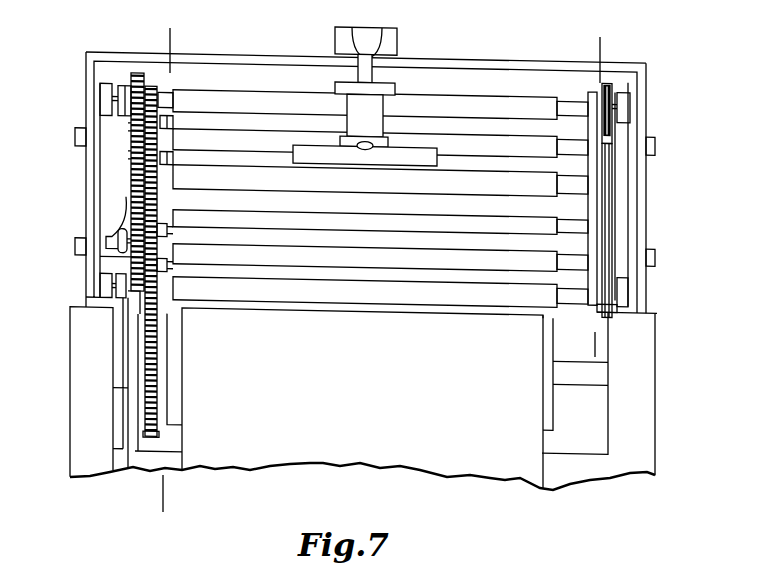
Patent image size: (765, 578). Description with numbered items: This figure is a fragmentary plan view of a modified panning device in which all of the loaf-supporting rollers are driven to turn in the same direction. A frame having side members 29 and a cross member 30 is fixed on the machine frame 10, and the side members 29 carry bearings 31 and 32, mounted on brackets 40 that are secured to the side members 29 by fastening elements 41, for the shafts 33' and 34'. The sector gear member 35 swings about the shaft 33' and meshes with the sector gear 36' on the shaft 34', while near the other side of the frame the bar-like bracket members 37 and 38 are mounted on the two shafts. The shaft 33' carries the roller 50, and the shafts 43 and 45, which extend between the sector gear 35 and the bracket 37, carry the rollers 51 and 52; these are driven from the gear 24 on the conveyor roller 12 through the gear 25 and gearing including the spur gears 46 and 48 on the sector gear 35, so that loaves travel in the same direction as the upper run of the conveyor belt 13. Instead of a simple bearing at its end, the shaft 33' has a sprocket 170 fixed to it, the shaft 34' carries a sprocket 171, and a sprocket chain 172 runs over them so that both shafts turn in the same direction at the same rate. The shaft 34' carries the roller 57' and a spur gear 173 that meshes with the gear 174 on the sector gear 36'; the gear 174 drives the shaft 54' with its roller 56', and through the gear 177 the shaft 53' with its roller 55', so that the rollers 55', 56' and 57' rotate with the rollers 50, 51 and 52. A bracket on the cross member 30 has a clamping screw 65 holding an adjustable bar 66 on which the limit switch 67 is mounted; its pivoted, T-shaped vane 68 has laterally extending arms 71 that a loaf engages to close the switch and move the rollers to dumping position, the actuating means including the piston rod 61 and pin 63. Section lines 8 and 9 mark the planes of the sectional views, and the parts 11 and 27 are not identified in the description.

The section line 8- 8 is at (168, 38).
The section line 9- 9 is at (600, 42).
The frame 10 is at (72, 458).
The base plate 11 is at (588, 378).
The conveyor roller 12 is at (547, 417).
The conveyor belt 13 is at (445, 468).
The gear 24 is at (147, 432).
The gear 25 is at (153, 316).
The guide post 27 is at (130, 388).
The side members 29 is at (88, 185).
The cross member 30 is at (500, 62).
The bearing 31 is at (105, 288).
The bearing 32 is at (108, 97).
The shaft 33' is at (572, 311).
The shaft 34' is at (373, 71).
The sector gear member 35 is at (130, 250).
The sector gear 36' is at (109, 151).
The bar-like bracket member 37 is at (590, 248).
The bar-like bracket member 38 is at (597, 157).
The brackets 40 is at (95, 155).
The fastening elements 41 is at (78, 133).
The shaft 43 is at (568, 258).
The shaft 45 is at (568, 222).
The spur gear 46 is at (165, 248).
The spur gear 48 is at (165, 218).
The roller 50 is at (332, 292).
The roller 51 is at (388, 252).
The roller 52 is at (432, 218).
The shaft 53' is at (374, 176).
The shaft 54' is at (374, 117).
The roller 55' is at (365, 131).
The roller 56' is at (365, 92).
The roller 57' is at (365, 71).
The piston rod 61 is at (127, 225).
The pin 63 is at (112, 236).
The clamping screw 65 is at (372, 33).
The bar 66 is at (373, 65).
The limit switch 67 is at (383, 142).
The vane 68 is at (374, 110).
The laterally extending arms 71 is at (435, 160).
The sprocket 170 is at (617, 315).
The sprocket 171 is at (610, 92).
The sprocket chain 172 is at (607, 222).
The spur gear 173 is at (162, 80).
The gear 174 is at (129, 127).
The gear 177 is at (129, 155).